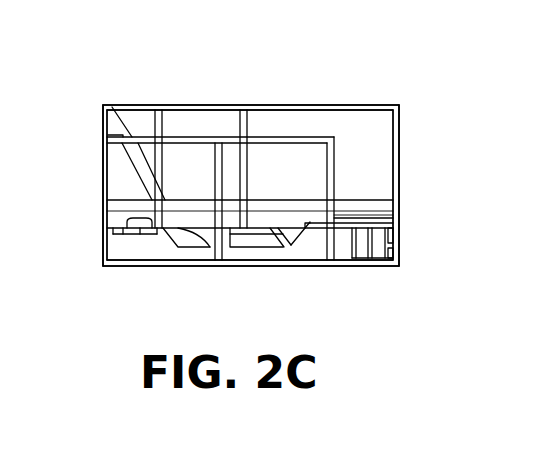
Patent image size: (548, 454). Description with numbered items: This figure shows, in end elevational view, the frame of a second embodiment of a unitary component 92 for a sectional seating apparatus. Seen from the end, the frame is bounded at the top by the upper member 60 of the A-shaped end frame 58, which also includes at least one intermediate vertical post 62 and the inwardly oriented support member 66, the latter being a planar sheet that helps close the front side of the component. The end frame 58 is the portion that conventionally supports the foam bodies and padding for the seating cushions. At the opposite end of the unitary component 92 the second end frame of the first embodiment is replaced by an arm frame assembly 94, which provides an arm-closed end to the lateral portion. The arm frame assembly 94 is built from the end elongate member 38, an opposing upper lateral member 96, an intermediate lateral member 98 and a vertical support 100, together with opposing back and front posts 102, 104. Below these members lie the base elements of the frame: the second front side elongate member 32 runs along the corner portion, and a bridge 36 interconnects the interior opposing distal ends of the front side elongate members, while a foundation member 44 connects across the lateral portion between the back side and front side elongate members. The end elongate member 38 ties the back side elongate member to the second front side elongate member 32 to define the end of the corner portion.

The unitary component 92 is at (368, 88).
The arm frame assembly 94 is at (92, 185).
The support member 66 is at (395, 143).
The upper member 60 is at (184, 105).
The end frame 58 is at (145, 88).
The intermediate vertical post 62 is at (248, 117).
The vertical support 100 is at (217, 173).
The intermediate lateral member 98 is at (220, 198).
The upper lateral member 96 is at (272, 137).
The front post 104 is at (332, 177).
The back post 102 is at (107, 232).
The foundation member 44 is at (262, 257).
The bridge 36 is at (360, 257).
The second front side elongate member 32 is at (385, 257).
The end elongate member 38 is at (152, 263).